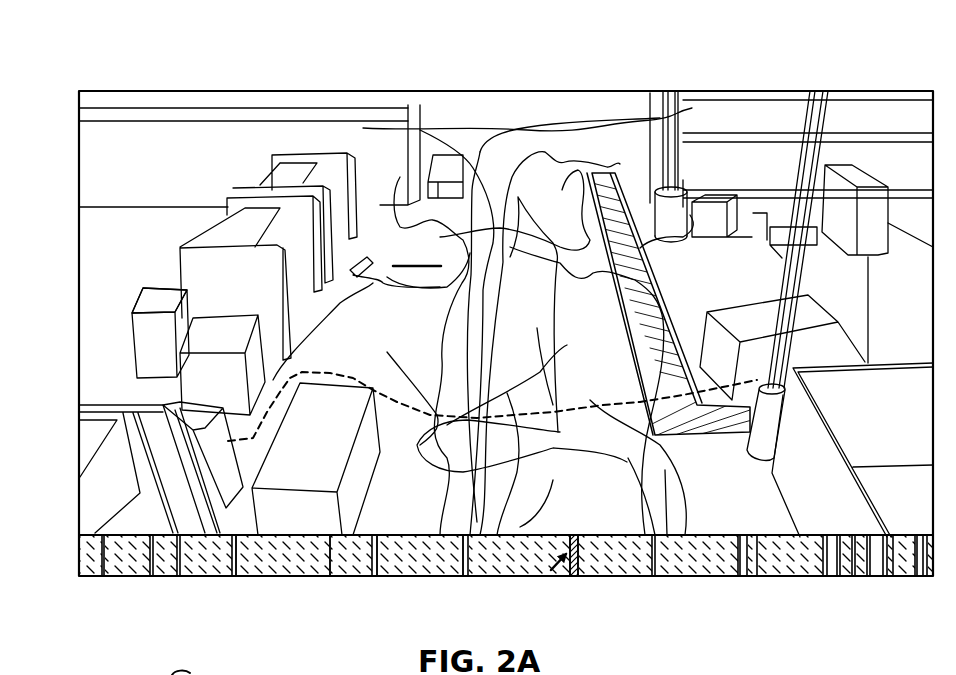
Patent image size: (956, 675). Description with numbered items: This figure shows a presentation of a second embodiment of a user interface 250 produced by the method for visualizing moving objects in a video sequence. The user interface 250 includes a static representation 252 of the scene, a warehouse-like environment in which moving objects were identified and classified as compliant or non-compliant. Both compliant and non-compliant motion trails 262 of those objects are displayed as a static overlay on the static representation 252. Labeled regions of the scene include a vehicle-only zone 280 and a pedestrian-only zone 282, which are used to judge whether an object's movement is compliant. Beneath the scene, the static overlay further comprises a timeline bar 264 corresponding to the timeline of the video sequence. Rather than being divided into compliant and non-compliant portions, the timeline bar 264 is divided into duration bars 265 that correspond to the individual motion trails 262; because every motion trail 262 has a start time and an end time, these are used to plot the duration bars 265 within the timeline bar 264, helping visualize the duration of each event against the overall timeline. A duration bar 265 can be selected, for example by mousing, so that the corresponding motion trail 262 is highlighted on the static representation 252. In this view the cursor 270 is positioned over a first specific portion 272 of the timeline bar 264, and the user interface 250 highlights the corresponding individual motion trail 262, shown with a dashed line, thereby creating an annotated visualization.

The user interface 250 is at (136, 42).
The static representation 252 is at (277, 89).
The motion trails 262 is at (413, 358).
The timeline bar 264 is at (73, 555).
The duration bars 265 is at (396, 571).
The cursor 270 is at (562, 575).
The first specific portion 272 is at (573, 537).
The vehicle-only zone 280 is at (419, 253).
The pedestrian-only zone 282 is at (695, 347).